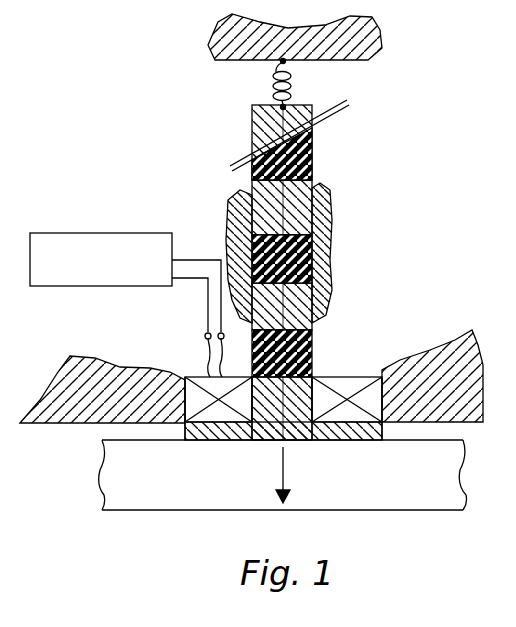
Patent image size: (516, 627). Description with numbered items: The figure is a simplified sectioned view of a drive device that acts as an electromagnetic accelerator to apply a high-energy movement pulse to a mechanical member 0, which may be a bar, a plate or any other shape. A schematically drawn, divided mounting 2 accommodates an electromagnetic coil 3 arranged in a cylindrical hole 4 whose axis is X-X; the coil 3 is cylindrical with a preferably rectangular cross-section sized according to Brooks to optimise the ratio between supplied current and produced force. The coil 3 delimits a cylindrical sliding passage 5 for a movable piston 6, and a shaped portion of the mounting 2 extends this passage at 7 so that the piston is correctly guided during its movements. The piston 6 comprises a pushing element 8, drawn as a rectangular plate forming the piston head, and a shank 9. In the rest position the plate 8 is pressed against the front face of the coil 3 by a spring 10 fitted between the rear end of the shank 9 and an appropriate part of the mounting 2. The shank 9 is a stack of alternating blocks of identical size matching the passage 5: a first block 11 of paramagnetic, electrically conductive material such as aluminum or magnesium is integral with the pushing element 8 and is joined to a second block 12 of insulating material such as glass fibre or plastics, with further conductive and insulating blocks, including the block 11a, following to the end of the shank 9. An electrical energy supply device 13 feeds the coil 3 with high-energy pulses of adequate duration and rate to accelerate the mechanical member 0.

The mechanical member 0 is at (460, 479).
The mounting 2 is at (358, 42).
The electromagnetic coil 3 is at (352, 388).
The cylindrical hole 4 is at (193, 378).
The cylindrical sliding passage 5 is at (299, 400).
The movable piston 6 is at (320, 150).
The extension of the cylindrical passage 7 is at (318, 206).
The pushing element 8 is at (350, 432).
The shank 9 is at (240, 175).
The spring 10 is at (266, 75).
The first block 11 is at (256, 124).
The lower insulating element 11a is at (270, 400).
The second block 12 is at (315, 168).
The electrical energy supply device 13 is at (44, 248).